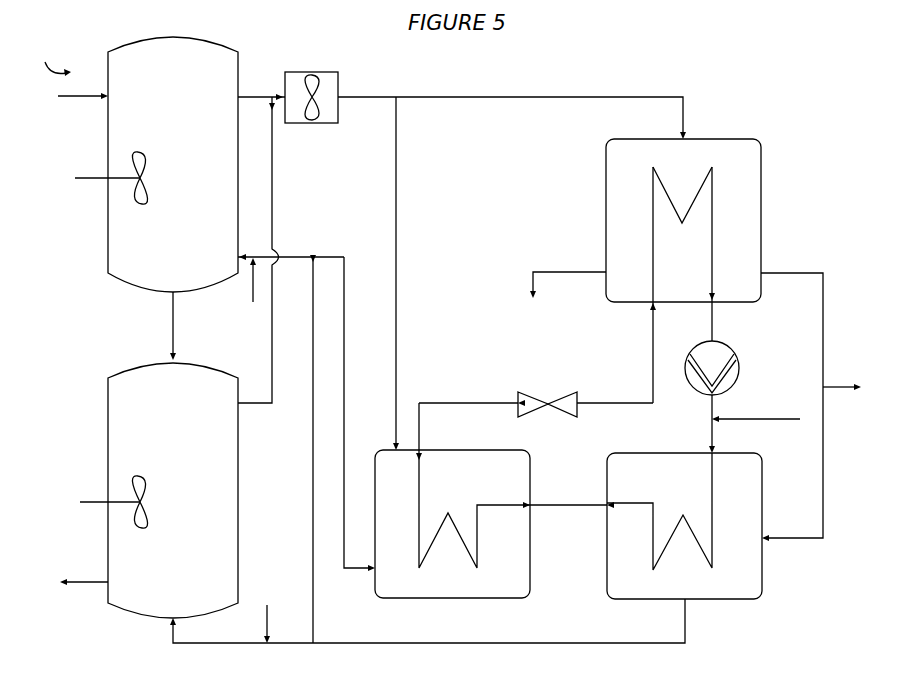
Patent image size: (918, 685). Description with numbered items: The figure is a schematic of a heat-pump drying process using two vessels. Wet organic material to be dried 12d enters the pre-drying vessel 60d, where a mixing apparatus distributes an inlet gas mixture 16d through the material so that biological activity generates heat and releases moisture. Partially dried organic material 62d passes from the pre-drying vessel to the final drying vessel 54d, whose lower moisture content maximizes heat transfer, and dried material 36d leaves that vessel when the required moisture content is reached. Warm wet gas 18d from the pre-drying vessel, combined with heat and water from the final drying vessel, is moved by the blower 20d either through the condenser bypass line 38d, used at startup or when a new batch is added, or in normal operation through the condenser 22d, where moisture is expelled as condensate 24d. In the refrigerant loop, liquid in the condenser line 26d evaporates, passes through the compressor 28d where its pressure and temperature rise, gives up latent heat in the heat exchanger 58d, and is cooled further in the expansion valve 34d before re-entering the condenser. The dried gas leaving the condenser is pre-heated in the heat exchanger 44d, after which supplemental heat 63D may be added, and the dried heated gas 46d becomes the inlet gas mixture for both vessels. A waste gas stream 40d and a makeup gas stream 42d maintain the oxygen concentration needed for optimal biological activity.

The organic material to be dried 12d is at (72, 110).
The warm wet gas 18d is at (157, 233).
The pre-drying vessel 60d is at (137, 164).
The blower 20d is at (311, 119).
The condenser bypass line 38d is at (402, 200).
The condenser 22d is at (549, 199).
The condensate 24d is at (570, 276).
The condenser line 26d is at (682, 312).
The compressor 28d is at (690, 380).
The supplemental heat 63D is at (761, 425).
The waste gas stream 40d is at (824, 407).
The expansion valve 34d is at (536, 359).
The heat exchanger 58d is at (476, 427).
The heat exchanger 44d is at (684, 526).
The dried heated gas 46d is at (458, 621).
The inlet gas mixture 16d is at (262, 441).
The makeup gas stream 42d is at (263, 450).
The partially dried organic material 62d is at (188, 326).
The final drying vessel 54d is at (137, 490).
The dried material 36d is at (69, 597).